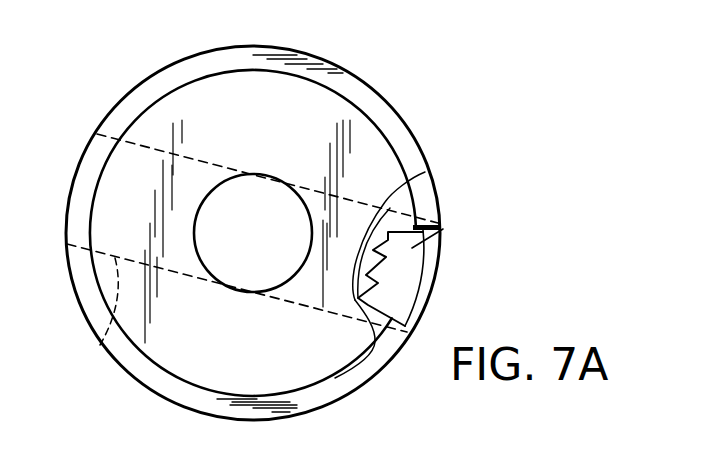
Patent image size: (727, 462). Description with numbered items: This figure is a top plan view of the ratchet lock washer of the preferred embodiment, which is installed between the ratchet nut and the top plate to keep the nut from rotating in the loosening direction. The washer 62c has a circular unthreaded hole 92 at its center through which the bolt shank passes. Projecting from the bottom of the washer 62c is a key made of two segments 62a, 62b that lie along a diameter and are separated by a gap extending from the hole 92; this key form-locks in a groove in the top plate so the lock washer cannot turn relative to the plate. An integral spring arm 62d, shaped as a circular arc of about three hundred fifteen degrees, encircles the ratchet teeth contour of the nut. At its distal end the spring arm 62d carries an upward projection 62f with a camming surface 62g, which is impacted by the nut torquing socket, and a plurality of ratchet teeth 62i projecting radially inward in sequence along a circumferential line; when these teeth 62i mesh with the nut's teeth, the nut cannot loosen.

The key segment 62a is at (96, 346).
The key segment 62b is at (355, 322).
The washer 62c is at (235, 77).
The spring arm 62d is at (168, 403).
The upward projection 62f is at (433, 282).
The camming surface 62g is at (440, 229).
The ratchet teeth 62i is at (425, 172).
The circular unthreaded hole 92 is at (195, 234).